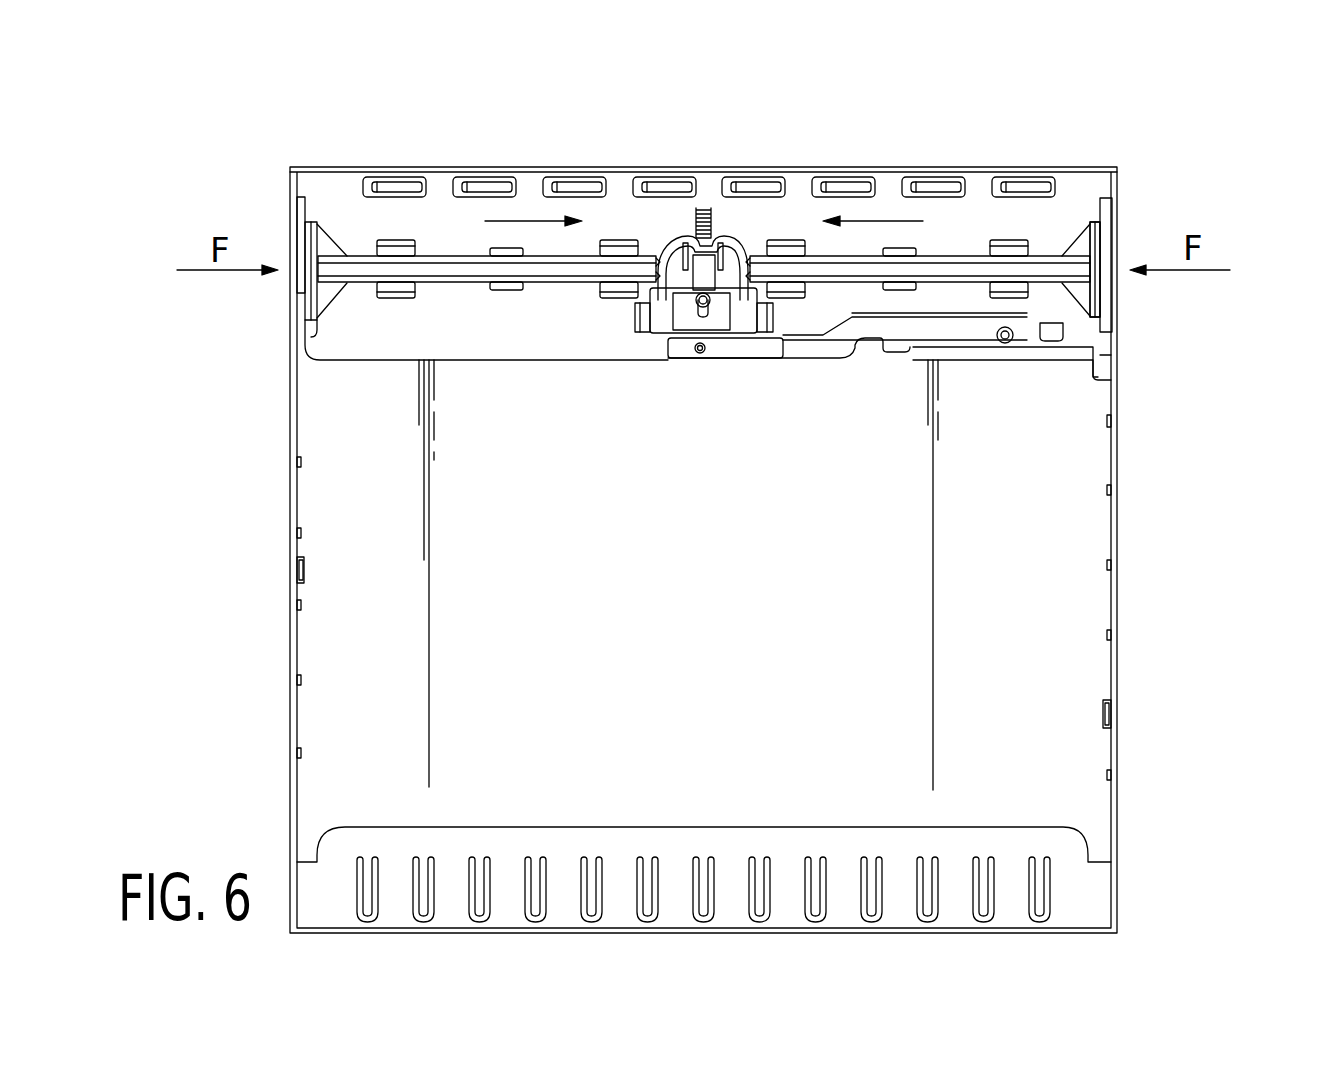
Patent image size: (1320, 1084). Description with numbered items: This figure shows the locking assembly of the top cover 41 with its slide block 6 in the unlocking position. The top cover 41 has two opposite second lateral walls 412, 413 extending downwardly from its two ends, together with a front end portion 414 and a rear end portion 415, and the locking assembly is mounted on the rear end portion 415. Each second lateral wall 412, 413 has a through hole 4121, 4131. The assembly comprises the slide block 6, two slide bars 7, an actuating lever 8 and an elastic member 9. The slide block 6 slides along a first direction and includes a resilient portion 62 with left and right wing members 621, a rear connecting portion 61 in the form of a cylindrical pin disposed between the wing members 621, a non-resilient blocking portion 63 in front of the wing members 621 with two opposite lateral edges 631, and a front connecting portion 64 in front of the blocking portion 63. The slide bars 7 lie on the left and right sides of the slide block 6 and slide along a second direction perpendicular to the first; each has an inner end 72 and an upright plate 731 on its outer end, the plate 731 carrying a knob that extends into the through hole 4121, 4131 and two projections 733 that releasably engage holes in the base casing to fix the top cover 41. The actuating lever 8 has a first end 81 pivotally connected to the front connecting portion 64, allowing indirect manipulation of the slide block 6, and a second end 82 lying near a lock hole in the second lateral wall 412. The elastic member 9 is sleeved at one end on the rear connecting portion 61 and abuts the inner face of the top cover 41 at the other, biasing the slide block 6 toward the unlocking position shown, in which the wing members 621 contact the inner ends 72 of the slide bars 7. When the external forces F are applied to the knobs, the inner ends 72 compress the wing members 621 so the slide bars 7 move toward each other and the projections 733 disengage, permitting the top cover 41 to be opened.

The top cover 41 is at (973, 805).
The second lateral wall 412 is at (1117, 483).
The through hole 4121 is at (1112, 305).
The second lateral wall 413 is at (297, 553).
The through hole 4131 is at (297, 232).
The front end portion 414 is at (1093, 905).
The rear end portion 415 is at (530, 187).
The slide block 6 is at (693, 279).
The rear connecting portion 61 is at (747, 250).
The resilient portion 62 is at (700, 262).
The wing members 621 is at (682, 247).
The non-resilient blocking portion 63 is at (668, 323).
The lateral edges 631 is at (640, 308).
The front connecting portion 64 is at (708, 350).
The slide bars 7 is at (434, 245).
The inner end 72 is at (655, 267).
The upright plate 731 is at (322, 357).
The projections 733 is at (1110, 277).
The actuating lever 8 is at (945, 410).
The first end 81 is at (687, 352).
The second end 82 is at (1108, 363).
The elastic member 9 is at (720, 212).